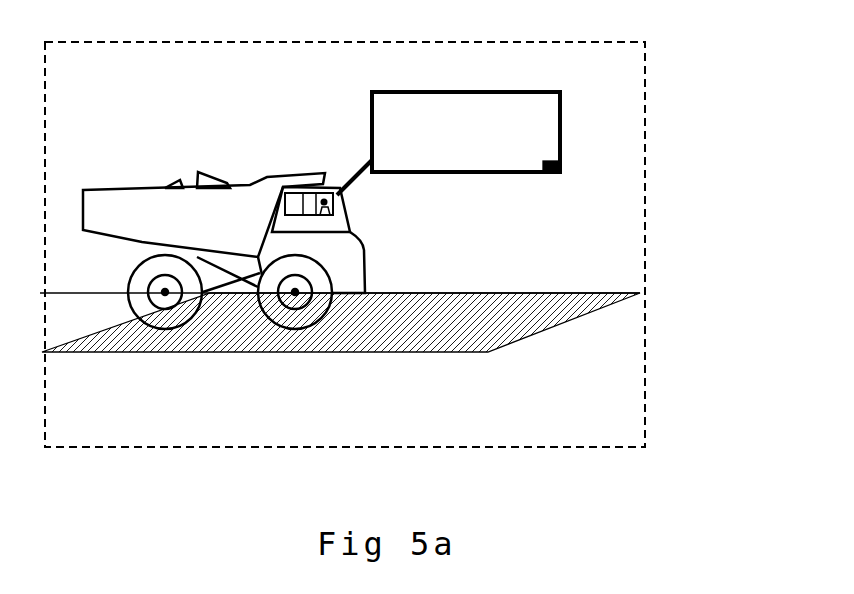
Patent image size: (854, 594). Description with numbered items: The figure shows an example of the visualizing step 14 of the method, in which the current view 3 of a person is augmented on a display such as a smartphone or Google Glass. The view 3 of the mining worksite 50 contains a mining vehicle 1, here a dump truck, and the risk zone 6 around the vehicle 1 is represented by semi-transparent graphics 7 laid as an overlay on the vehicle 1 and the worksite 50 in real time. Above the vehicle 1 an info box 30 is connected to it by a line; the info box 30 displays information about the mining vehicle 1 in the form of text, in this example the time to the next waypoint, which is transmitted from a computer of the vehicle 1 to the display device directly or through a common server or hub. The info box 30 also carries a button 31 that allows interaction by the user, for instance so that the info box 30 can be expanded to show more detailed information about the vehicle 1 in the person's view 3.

The mining vehicle 1 is at (293, 148).
The current view 3 is at (628, 145).
The risk zone 6 is at (583, 267).
The semi-transparent graphics 7 is at (470, 340).
The visualizing 14 is at (672, 20).
The info box 30 is at (540, 92).
The button 31 is at (561, 173).
The mining worksite 50 is at (122, 95).